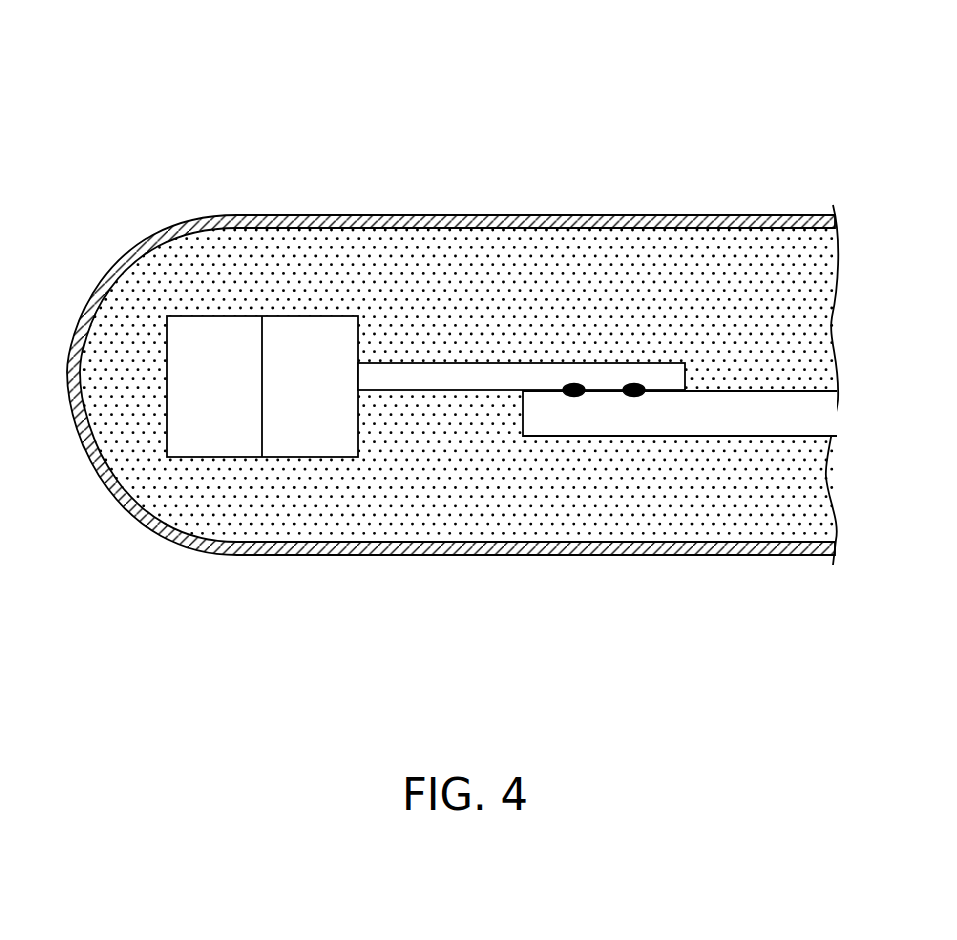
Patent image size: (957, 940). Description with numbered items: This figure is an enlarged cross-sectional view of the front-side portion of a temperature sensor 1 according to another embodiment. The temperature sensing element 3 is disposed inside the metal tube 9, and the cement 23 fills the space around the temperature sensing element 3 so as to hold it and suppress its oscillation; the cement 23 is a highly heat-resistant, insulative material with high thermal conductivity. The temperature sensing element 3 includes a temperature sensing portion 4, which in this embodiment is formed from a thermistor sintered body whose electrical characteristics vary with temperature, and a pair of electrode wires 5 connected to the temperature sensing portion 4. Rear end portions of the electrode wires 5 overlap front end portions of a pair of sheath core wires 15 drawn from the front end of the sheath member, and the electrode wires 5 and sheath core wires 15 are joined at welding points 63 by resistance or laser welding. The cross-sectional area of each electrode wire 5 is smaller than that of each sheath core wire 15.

The temperature sensor 1 is at (610, 73).
The temperature sensing element 3 is at (235, 396).
The temperature sensing portion 4 is at (215, 407).
The electrode wire 5 is at (422, 368).
The metal tube 9 is at (343, 222).
The sheath core wire 15 is at (750, 392).
The cement 23 is at (608, 512).
The welding point 63 is at (574, 385).